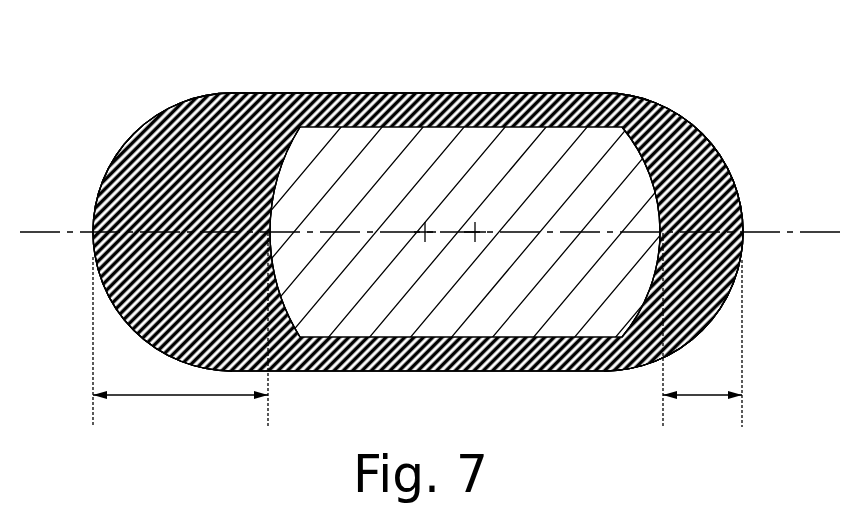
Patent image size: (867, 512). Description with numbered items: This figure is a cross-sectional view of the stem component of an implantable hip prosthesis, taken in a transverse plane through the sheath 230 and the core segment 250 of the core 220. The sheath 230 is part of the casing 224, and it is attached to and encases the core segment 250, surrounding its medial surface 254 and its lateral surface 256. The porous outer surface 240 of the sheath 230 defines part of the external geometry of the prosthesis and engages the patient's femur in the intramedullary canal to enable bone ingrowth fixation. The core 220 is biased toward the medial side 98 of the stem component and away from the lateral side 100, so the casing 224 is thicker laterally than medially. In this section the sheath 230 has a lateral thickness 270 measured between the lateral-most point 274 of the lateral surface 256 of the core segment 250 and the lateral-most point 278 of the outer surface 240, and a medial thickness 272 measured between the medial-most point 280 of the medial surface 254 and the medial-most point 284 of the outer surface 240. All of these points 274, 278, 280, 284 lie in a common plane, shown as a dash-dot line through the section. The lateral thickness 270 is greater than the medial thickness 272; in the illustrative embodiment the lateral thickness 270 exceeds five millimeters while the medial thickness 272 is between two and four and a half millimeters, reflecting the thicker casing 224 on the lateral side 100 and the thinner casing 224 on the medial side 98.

The medial side 98 is at (703, 104).
The lateral side 100 is at (389, 205).
The core 220 is at (516, 93).
The casing 224 is at (733, 181).
The sheath 230 is at (601, 93).
The outer surface 240 is at (110, 192).
The core segment 250 is at (410, 127).
The medial surface 254 is at (673, 172).
The lateral surface 256 is at (282, 122).
The lateral thickness 270 is at (177, 397).
The medial thickness 272 is at (700, 400).
The lateral-most point 274 is at (272, 233).
The lateral-most point 278 is at (93, 232).
The medial-most point 280 is at (660, 232).
The medial-most point 284 is at (744, 232).